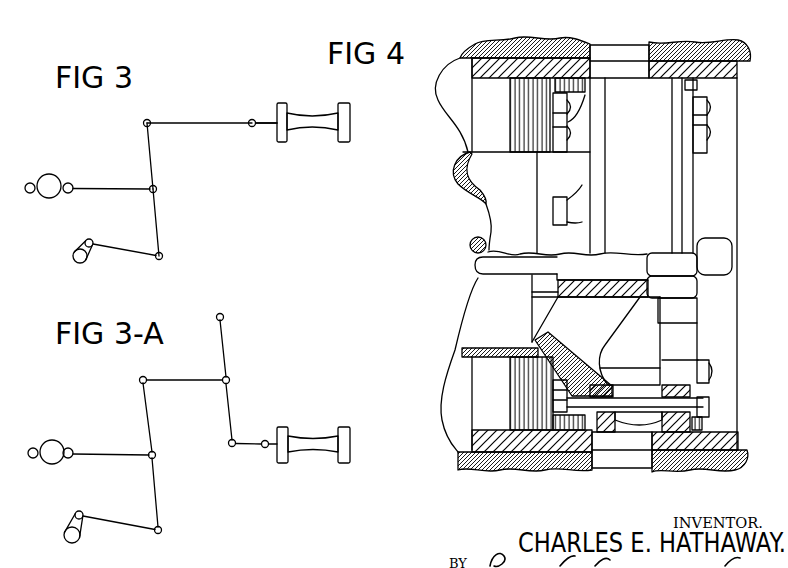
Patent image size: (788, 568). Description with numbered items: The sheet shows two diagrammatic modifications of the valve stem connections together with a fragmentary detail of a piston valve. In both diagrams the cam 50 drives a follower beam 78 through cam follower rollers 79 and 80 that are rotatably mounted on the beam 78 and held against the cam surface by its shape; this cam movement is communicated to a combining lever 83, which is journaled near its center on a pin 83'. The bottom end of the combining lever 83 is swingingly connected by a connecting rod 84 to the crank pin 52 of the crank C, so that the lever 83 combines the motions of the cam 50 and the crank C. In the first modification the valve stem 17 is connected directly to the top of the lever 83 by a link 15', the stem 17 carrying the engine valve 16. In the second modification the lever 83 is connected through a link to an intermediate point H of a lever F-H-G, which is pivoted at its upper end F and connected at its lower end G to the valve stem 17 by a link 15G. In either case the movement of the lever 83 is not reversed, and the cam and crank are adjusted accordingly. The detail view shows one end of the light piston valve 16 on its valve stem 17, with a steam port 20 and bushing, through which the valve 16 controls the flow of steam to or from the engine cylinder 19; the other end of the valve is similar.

In FIG. 3, the link 15' is at (211, 112).
In FIG. 3A, the link 15G is at (247, 448).
In FIG. 3, the engine valve 16 is at (317, 131).
In FIG. 3A, the engine valve 16 is at (316, 440).
In FIG. 4, the engine valve 16 is at (658, 175).
In FIG. 3, the valve stem 17 is at (265, 121).
In FIG. 3A, the valve stem 17 is at (275, 428).
In FIG. 4, the valve stem 17 is at (475, 264).
In FIG. 4, the engine cylinder 19 is at (518, 470).
In FIG. 4, the ports 20 is at (617, 55).
In FIG. 3, the cam 50 is at (50, 178).
In FIG. 3A, the cam 50 is at (53, 443).
In FIG. 3, the crank pin 52 is at (95, 242).
In FIG. 3A, the crank pin 52 is at (84, 514).
In FIG. 3, the follower beam 78 is at (120, 189).
In FIG. 3A, the follower beam 78 is at (113, 457).
In FIG. 3, the cam follower roller 79 is at (71, 185).
In FIG. 3A, the cam follower roller 79 is at (73, 451).
In FIG. 3, the cam follower roller 80 is at (30, 183).
In FIG. 3A, the cam follower roller 80 is at (33, 448).
In FIG. 3, the combining lever 83 is at (167, 156).
In FIG. 3A, the combining lever 83 is at (162, 417).
In FIG. 3, the pin 83' is at (168, 221).
In FIG. 3A, the pin 83' is at (167, 491).
In FIG. 3, the connecting rod 84 is at (125, 250).
In FIG. 3A, the connecting rod 84 is at (118, 528).
In FIG. 3, the crank C is at (86, 242).
In FIG. 3A, the crank C is at (75, 515).
In FIG. 3A, the upper end of lever F-H-G F is at (224, 316).
In FIG. 3A, the lower end of lever F-H- G is at (236, 440).
In FIG. 3A, the intermediate point of lever F-H-G H is at (230, 380).